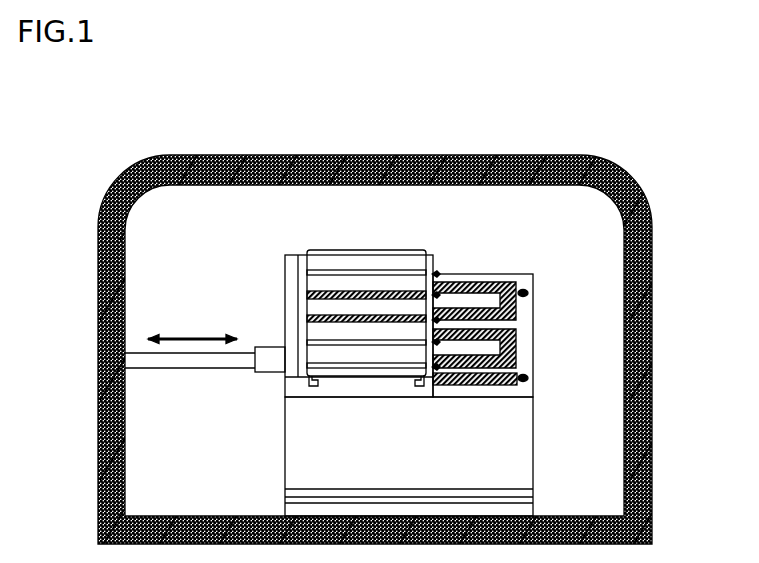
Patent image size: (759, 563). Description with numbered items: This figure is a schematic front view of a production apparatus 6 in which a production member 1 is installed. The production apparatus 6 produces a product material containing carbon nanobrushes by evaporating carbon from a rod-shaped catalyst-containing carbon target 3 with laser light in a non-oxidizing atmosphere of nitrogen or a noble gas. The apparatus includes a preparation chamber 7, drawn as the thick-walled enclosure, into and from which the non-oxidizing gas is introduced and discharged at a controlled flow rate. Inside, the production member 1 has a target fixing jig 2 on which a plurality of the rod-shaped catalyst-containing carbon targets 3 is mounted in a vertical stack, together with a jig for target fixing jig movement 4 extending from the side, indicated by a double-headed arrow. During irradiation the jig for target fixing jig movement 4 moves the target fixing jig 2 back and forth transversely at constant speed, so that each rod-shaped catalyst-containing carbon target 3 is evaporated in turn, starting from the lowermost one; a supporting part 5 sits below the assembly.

The production member 1 is at (527, 245).
The target fixing jig 2 is at (282, 270).
The rod-shaped catalyst-containing carbon target 3 is at (365, 245).
The jig for target fixing jig movement 4 is at (200, 377).
The base 5 is at (278, 463).
The production apparatus 6 is at (648, 177).
The preparation chamber 7 is at (243, 160).